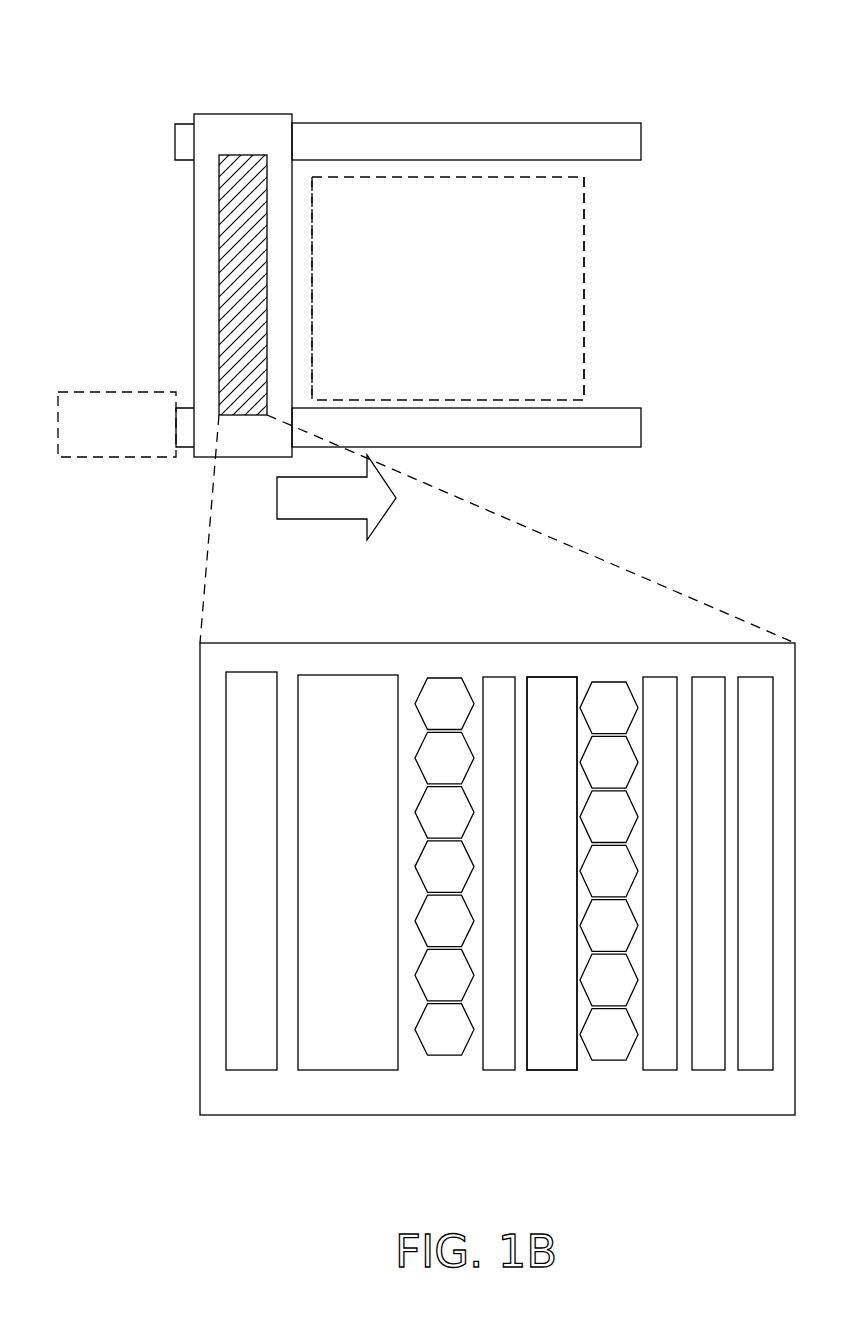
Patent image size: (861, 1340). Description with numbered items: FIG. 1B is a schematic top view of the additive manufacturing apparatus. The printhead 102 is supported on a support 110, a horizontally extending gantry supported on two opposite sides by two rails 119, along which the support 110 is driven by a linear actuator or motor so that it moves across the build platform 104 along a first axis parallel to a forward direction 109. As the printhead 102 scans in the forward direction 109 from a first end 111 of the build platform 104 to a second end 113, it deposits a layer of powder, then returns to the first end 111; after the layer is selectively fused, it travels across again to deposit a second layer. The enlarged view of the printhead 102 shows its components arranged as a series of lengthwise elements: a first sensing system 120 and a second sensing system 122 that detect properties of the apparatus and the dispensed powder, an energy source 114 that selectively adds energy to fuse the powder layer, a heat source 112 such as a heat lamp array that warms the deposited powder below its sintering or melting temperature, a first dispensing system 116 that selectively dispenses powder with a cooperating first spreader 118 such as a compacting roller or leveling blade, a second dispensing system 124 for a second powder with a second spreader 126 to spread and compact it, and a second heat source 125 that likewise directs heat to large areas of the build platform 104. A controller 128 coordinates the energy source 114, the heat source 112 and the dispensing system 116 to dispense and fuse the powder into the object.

The support 110 is at (268, 146).
The printhead 102 is at (216, 293).
The rails 119 is at (641, 143).
The build platform 104 is at (496, 267).
The second end 113 is at (584, 270).
The first end 111 is at (312, 262).
The controller 128 is at (142, 438).
The forward direction 109 is at (347, 511).
The first sensing system 120 is at (262, 1059).
The energy source 114 is at (357, 1060).
The second heat source 125 is at (444, 1060).
The second spreader 126 is at (503, 688).
The heat source 112 is at (565, 677).
The second dispensing system 124 is at (570, 1058).
The first spreader 118 is at (663, 1060).
The first dispensing system 116 is at (710, 688).
The second sensing system 122 is at (760, 1062).